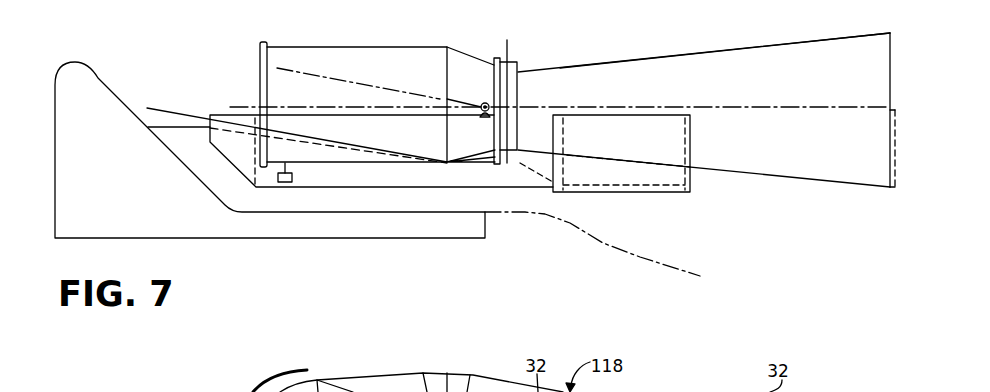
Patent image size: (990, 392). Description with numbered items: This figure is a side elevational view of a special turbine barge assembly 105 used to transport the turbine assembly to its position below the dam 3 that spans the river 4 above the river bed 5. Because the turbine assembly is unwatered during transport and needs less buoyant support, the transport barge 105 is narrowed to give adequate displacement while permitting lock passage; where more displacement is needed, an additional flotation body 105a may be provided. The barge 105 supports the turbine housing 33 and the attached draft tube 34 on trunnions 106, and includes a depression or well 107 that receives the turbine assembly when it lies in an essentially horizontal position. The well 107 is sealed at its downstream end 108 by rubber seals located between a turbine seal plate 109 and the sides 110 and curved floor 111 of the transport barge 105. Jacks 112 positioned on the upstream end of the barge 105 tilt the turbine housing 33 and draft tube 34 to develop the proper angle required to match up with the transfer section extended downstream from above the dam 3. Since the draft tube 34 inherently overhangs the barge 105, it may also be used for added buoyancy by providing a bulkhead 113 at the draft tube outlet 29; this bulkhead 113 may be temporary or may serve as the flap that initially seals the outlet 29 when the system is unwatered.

The dam 3 is at (97, 175).
The river 4 is at (790, 231).
The river bed 5 is at (653, 262).
The outlet 29 is at (898, 63).
The turbine housing 33 is at (325, 62).
The draft tube 34 is at (757, 68).
The turbine barge assembly 105 is at (333, 178).
The additional flotation body 105a is at (603, 143).
The trunnions 106 is at (484, 103).
The depression or well 107 is at (250, 118).
The downstream end 108 is at (494, 170).
The turbine seal plate 109 is at (500, 97).
The sides 110 is at (507, 135).
The curved floor 111 is at (520, 165).
The jacks 112 is at (285, 182).
The bulkhead 113 is at (895, 147).